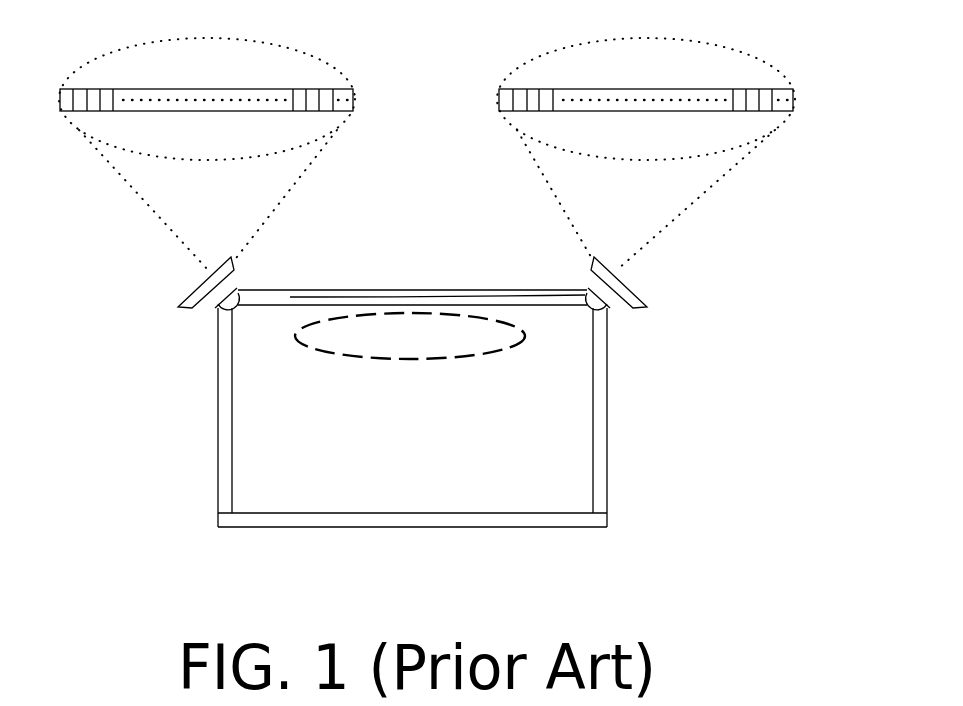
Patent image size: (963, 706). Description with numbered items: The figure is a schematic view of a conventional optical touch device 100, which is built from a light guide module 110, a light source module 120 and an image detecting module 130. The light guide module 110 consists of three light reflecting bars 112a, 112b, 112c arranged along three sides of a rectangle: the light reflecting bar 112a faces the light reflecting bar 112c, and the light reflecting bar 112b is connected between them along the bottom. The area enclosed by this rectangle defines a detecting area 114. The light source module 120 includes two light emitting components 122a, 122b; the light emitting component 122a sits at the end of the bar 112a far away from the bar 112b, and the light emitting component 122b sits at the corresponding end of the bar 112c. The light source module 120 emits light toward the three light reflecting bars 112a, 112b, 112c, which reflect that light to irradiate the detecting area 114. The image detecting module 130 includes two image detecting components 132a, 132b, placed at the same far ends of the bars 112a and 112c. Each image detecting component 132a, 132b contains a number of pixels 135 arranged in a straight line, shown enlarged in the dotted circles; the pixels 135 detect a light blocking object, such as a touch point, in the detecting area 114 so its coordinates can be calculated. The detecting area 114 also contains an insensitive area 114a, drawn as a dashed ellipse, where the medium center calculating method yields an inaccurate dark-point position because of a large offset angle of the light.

The conventional optical touch device 100 is at (228, 590).
The light guide module 110 is at (506, 469).
The light reflecting bar 112a is at (224, 501).
The light reflecting bar 112b is at (583, 520).
The light reflecting bar 112c is at (600, 471).
The detecting area 114 is at (267, 460).
The insensitive area 114a is at (493, 337).
The light source module 120 is at (304, 357).
The light emitting component 122a is at (218, 310).
The light emitting component 122b is at (290, 297).
The image detecting module 130 is at (412, 250).
The image detecting component 132a is at (236, 280).
The image detecting component 132b is at (588, 284).
The pixels 135 is at (82, 93).